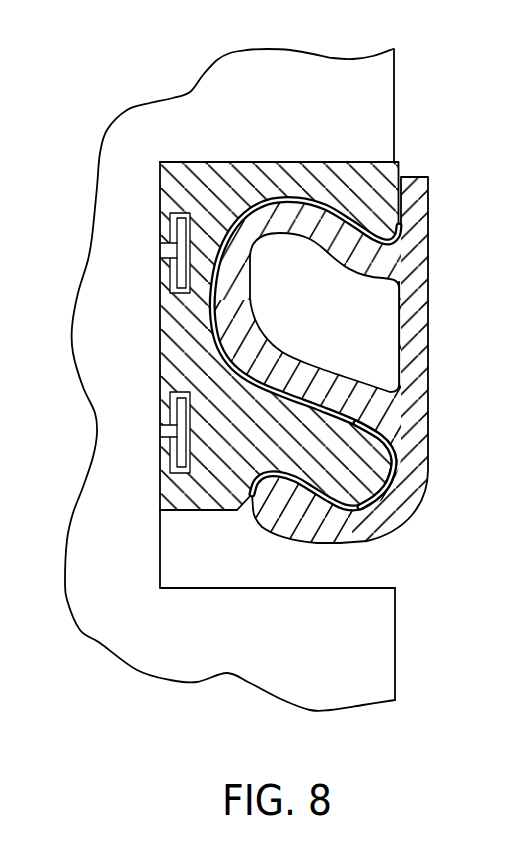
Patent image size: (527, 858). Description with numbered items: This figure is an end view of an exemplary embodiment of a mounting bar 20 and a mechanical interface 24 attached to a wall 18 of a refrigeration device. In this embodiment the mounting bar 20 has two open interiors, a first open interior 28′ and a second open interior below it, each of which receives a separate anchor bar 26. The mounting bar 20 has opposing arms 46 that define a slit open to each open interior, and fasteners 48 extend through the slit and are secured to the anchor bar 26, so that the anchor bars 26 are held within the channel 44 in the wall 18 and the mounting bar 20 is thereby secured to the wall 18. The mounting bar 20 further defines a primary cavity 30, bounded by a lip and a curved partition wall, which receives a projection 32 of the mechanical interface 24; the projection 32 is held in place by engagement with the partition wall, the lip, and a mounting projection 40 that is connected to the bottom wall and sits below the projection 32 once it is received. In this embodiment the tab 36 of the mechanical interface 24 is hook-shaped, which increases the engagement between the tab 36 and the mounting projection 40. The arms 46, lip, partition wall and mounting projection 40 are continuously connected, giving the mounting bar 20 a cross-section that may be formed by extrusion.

The wall 18 is at (193, 160).
The mounting bar 20 is at (176, 318).
The mechanical interface 24 is at (410, 335).
The anchor bar 26 is at (177, 227).
The first open interior 28′ is at (190, 217).
The primary cavity 30 is at (286, 198).
The projection 32 is at (237, 287).
The tab 36 is at (300, 530).
The mounting projection 40 is at (367, 446).
The channel 44 is at (185, 558).
The opposing arms 46 is at (165, 180).
The fasteners 48 is at (163, 264).